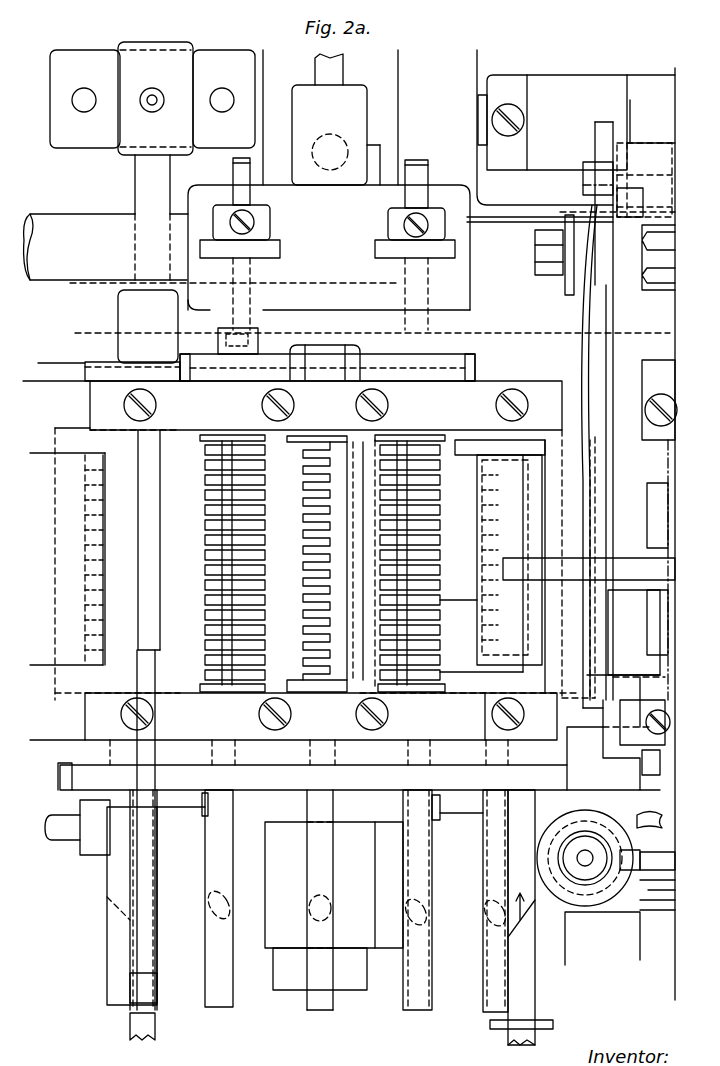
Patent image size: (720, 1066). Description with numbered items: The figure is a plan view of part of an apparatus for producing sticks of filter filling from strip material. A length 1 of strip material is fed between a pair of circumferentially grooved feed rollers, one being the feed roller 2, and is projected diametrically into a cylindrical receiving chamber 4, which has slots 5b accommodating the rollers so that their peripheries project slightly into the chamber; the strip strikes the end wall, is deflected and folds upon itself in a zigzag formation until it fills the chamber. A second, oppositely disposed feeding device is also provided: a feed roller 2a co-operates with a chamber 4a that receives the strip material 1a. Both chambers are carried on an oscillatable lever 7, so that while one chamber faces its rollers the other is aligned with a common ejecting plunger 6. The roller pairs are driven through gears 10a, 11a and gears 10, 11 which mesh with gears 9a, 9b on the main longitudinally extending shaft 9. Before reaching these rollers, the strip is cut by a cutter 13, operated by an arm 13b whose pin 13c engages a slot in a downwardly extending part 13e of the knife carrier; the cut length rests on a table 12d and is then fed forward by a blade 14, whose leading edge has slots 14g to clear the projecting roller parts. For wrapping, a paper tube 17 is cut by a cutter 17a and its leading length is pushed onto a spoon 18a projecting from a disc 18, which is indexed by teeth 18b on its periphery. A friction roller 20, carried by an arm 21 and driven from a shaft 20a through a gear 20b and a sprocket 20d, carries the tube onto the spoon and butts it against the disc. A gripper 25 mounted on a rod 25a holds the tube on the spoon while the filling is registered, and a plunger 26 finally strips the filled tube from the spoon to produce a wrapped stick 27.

The length of strip material 1 is at (458, 462).
The strip material 1a is at (70, 455).
The feed roller 2 is at (430, 625).
The feed roller 2a is at (214, 620).
The cylindrical receiving chamber 4 is at (386, 682).
The chamber 4a is at (340, 670).
The slots 5b is at (312, 630).
The ejecting plunger 6 is at (326, 268).
The oscillatable lever 7 is at (346, 581).
The main longitudinally extending shaft 9 is at (96, 228).
The gear 9a is at (418, 178).
The gear 9b is at (240, 180).
The gear 10 is at (456, 252).
The gear 10a is at (476, 366).
The gear 11 is at (200, 248).
The gear 11a is at (196, 360).
The table 12d is at (490, 674).
The cutter 13 is at (600, 668).
The arm 13b is at (645, 120).
The pin 13c is at (585, 165).
The downwardly extending part 13e is at (590, 182).
The blade 14 is at (530, 658).
The slots 14g is at (96, 622).
The paper tube 17 is at (518, 985).
The cutter 17a is at (554, 1026).
The disc 18 is at (560, 785).
The spoon 18a is at (512, 858).
The teeth 18b is at (66, 772).
The friction roller 20 is at (574, 894).
The shaft 20a is at (586, 842).
The gear 20b is at (590, 904).
The sprocket 20d is at (639, 811).
The arm 21 is at (648, 893).
The gripper 25 is at (90, 858).
The rod 25a is at (70, 832).
The plunger 26 is at (146, 754).
The wrapped stick 27 is at (150, 915).